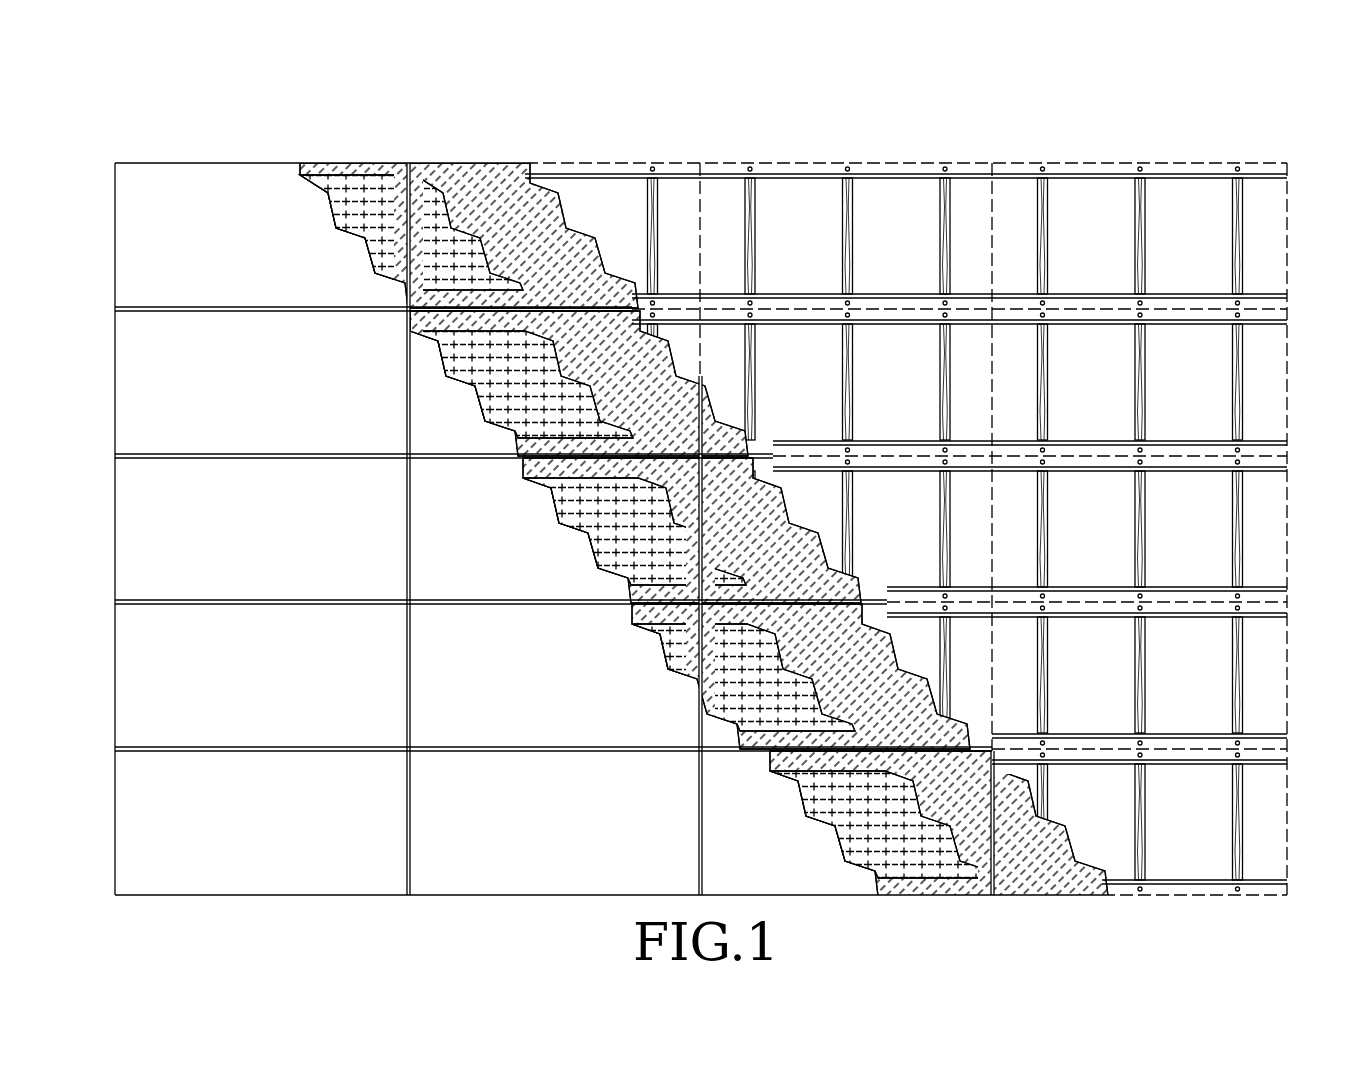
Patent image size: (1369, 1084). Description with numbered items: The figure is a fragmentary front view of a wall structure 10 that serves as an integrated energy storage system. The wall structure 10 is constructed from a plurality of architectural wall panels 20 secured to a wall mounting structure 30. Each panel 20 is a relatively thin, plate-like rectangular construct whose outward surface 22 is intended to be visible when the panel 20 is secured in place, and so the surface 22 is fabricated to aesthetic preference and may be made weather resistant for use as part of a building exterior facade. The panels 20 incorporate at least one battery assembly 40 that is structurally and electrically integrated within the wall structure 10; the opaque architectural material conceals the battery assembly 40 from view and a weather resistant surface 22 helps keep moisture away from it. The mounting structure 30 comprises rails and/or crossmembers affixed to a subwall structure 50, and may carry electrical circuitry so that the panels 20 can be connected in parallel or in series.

The wall structure 10 is at (260, 132).
The architectural wall panel 20 is at (183, 516).
The surface 22 is at (294, 528).
The wall mounting structure 30 is at (901, 296).
The battery assembly 40 is at (434, 212).
The subwall structure 50 is at (1241, 212).